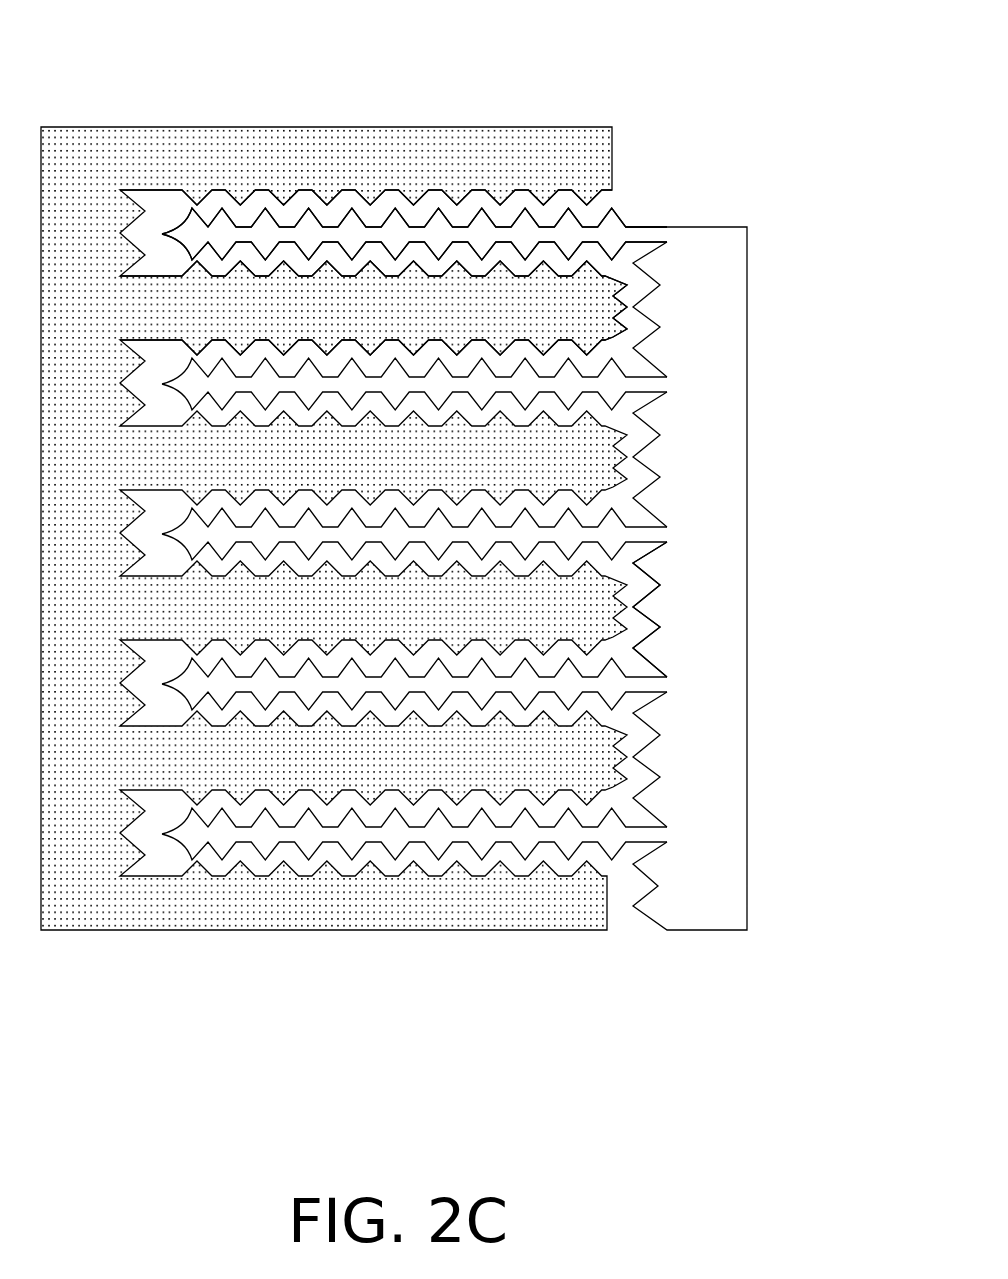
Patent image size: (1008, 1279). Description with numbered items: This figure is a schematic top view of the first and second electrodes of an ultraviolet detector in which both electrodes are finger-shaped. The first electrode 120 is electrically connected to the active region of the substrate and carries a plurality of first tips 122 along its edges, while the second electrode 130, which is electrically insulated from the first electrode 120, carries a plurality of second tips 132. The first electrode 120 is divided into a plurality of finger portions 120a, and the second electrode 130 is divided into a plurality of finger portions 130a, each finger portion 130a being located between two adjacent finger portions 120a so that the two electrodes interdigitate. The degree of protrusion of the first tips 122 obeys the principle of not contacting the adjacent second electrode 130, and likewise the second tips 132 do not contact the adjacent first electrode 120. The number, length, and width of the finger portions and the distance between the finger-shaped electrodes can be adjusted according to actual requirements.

The first electrode 120 is at (320, 163).
The first tips 122 is at (420, 190).
The finger portions 120a is at (455, 305).
The second electrode 130 is at (708, 452).
The finger portions 130a is at (633, 237).
The second tips 132 is at (648, 602).